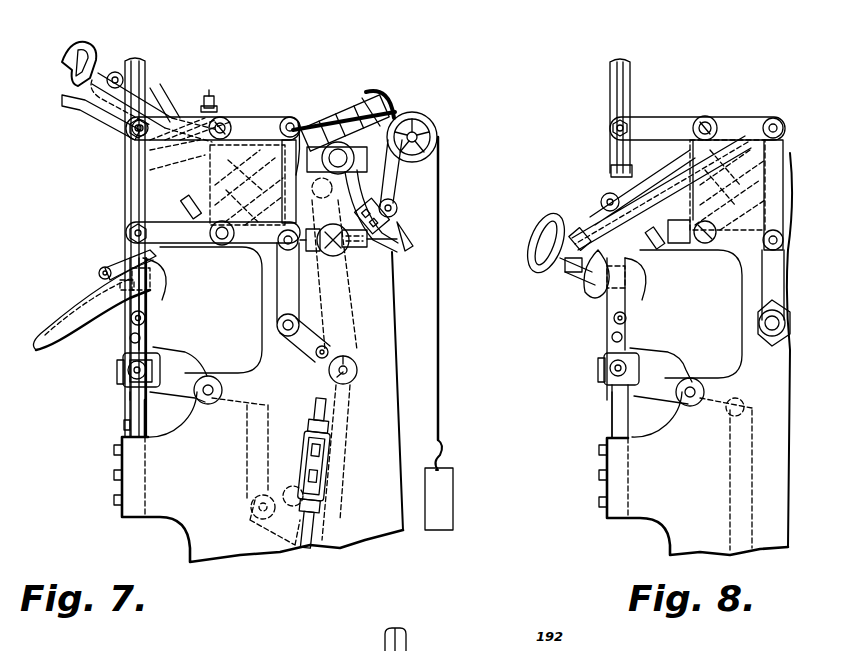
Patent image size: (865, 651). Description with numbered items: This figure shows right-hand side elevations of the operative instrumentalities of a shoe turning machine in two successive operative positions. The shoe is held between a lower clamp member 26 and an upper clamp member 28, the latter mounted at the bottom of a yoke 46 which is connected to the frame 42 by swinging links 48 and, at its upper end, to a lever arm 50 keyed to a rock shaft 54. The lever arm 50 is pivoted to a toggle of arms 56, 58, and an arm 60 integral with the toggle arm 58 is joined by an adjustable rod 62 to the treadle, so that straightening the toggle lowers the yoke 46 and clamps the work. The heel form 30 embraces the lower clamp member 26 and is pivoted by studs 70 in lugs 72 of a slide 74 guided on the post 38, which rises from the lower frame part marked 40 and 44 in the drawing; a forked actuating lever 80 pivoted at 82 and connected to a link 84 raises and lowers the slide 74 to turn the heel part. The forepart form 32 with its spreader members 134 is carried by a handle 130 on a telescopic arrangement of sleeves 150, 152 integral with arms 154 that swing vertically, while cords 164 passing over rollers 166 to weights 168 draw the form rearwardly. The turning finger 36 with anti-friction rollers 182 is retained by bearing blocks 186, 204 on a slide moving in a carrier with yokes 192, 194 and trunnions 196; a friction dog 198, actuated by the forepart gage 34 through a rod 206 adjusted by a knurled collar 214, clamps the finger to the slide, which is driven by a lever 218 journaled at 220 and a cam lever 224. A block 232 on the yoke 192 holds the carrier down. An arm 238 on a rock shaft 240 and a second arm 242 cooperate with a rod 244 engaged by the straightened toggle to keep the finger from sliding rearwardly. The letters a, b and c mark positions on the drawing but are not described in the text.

In FIG. 7, the lower clamp member 26 is at (150, 295).
In FIG. 8, the lower clamp member 26 is at (632, 294).
In FIG. 8, the upper clamp member 28 is at (588, 302).
In FIG. 7, the heel form 30 is at (148, 308).
In FIG. 8, the heel form 30 is at (628, 310).
In FIG. 7, the forepart form 32 is at (92, 133).
In FIG. 7, the forepart gage 34 is at (205, 200).
In FIG. 8, the forepart gage 34 is at (650, 246).
In FIG. 7, the forepart turning finger 36 is at (126, 262).
In FIG. 7, the post 38 is at (137, 410).
In FIG. 8, the post 38 is at (616, 410).
In FIG. 7, the casing wall 40 is at (125, 486).
In FIG. 8, the casing wall 40 is at (608, 512).
In FIG. 7, the frame 42 is at (395, 394).
In FIG. 8, the frame 42 is at (740, 314).
In FIG. 7, the bolts 44 is at (114, 478).
In FIG. 8, the bolts 44 is at (600, 480).
In FIG. 7, the yoke 46 is at (135, 176).
In FIG. 8, the yoke 46 is at (612, 84).
In FIG. 7, the swinging links 48 is at (202, 244).
In FIG. 8, the swinging links 48 is at (698, 256).
In FIG. 7, the lever arm 50 is at (175, 118).
In FIG. 8, the lever arm 50 is at (650, 122).
In FIG. 7, the rock shaft 54 is at (228, 120).
In FIG. 8, the rock shaft 54 is at (712, 128).
In FIG. 7, the toggle arm 56 is at (287, 210).
In FIG. 8, the toggle arm 56 is at (768, 214).
In FIG. 7, the toggle arm 58 is at (283, 292).
In FIG. 8, the toggle arm 58 is at (768, 338).
In FIG. 7, the arm 60 is at (282, 365).
In FIG. 7, the adjustable rod 62 is at (308, 530).
In FIG. 7, the studs 70 is at (141, 338).
In FIG. 8, the studs 70 is at (623, 337).
In FIG. 7, the lugs 72 is at (126, 346).
In FIG. 8, the lugs 72 is at (610, 340).
In FIG. 7, the slide 74 is at (142, 349).
In FIG. 8, the slide 74 is at (640, 350).
In FIG. 7, the actuating lever 80 is at (176, 408).
In FIG. 8, the actuating lever 80 is at (656, 390).
In FIG. 7, the pivot 82 is at (209, 386).
In FIG. 8, the pivot 82 is at (690, 398).
In FIG. 7, the link 84 is at (246, 454).
In FIG. 8, the link 84 is at (736, 456).
In FIG. 7, the handle 130 is at (68, 58).
In FIG. 8, the handle 130 is at (545, 237).
In FIG. 7, the spreader members 134 is at (78, 108).
In FIG. 8, the spreader members 134 is at (590, 284).
In FIG. 7, the sleeves 150 is at (165, 152).
In FIG. 8, the sleeves 150 is at (590, 232).
In FIG. 7, the sleeves 152 is at (102, 86).
In FIG. 8, the sleeves 152 is at (612, 192).
In FIG. 7, the arms 154 is at (160, 95).
In FIG. 8, the arms 154 is at (640, 178).
In FIG. 7, the cords 164 is at (440, 226).
In FIG. 7, the rollers 166 is at (437, 128).
In FIG. 7, the weights 168 is at (448, 502).
In FIG. 7, the anti-friction rollers 182 is at (103, 268).
In FIG. 7, the bearing block 186 is at (282, 120).
In FIG. 7, the yoke 192 is at (284, 244).
In FIG. 7, the yoke 194 is at (308, 120).
In FIG. 7, the trunnions 196 is at (362, 176).
In FIG. 7, the friction dog 198 is at (340, 98).
In FIG. 7, the bearing block 204 is at (362, 104).
In FIG. 7, the rod 206 is at (190, 192).
In FIG. 8, the rod 206 is at (714, 236).
In FIG. 8, the knurled collar 214 is at (756, 128).
In FIG. 7, the lever 218 is at (345, 352).
In FIG. 7, the pivot 220 is at (356, 368).
In FIG. 7, the cam lever 224 is at (282, 537).
In FIG. 7, the block 232 is at (185, 160).
In FIG. 8, the block 232 is at (604, 140).
In FIG. 7, the arm 238 is at (398, 110).
In FIG. 7, the rock shaft 240 is at (398, 203).
In FIG. 7, the arm 242 is at (430, 245).
In FIG. 7, the rod 244 is at (391, 253).
In FIG. 7, the lever a is at (97, 296).
In FIG. 8, the lever a is at (590, 292).
In FIG. 7, the sector b is at (155, 273).
In FIG. 8, the sector b is at (640, 276).
In FIG. 7, the point c is at (60, 326).